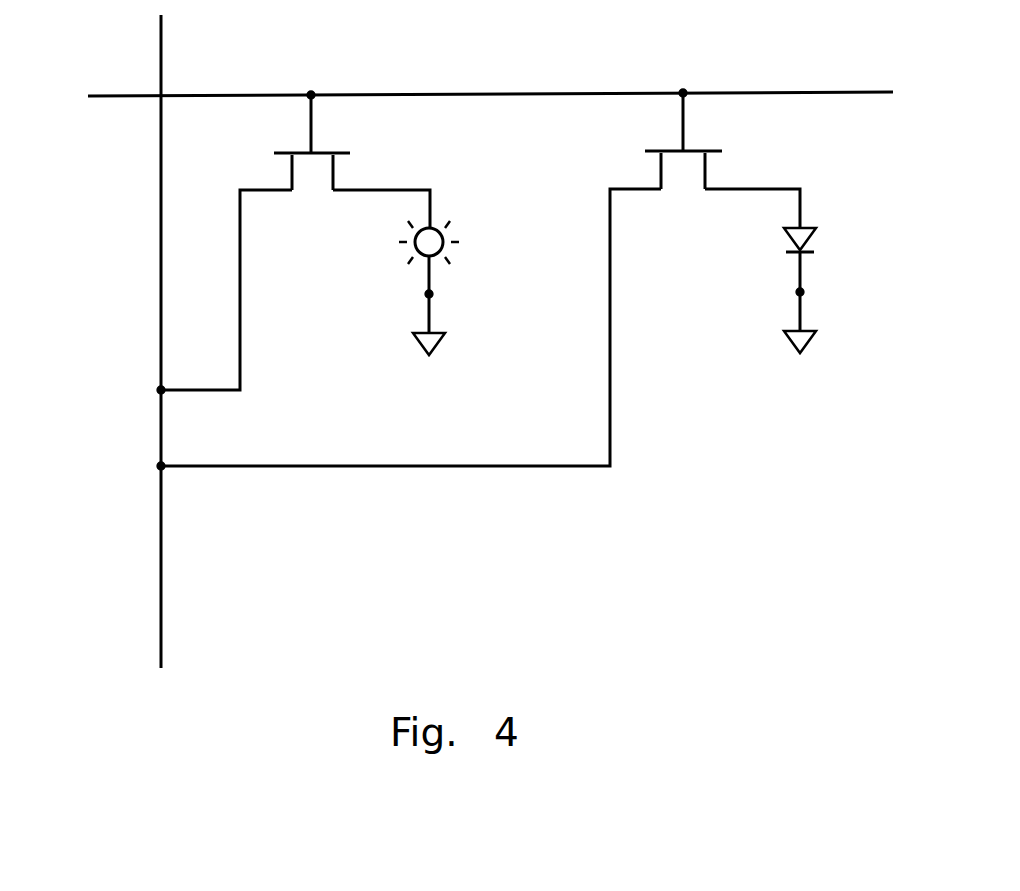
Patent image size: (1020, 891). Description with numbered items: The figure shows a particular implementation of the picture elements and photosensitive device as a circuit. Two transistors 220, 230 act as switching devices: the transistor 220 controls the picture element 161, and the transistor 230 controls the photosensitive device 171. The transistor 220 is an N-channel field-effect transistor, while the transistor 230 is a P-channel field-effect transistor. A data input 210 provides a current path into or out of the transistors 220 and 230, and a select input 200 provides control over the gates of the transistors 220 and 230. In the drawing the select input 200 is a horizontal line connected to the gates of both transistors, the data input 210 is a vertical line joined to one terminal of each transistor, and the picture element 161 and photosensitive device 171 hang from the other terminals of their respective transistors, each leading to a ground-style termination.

The select input 200 is at (108, 100).
The data input 210 is at (160, 572).
The transistor 220 is at (346, 152).
The transistor 230 is at (718, 149).
The picture element 161 is at (443, 252).
The photosensitive device 171 is at (815, 238).